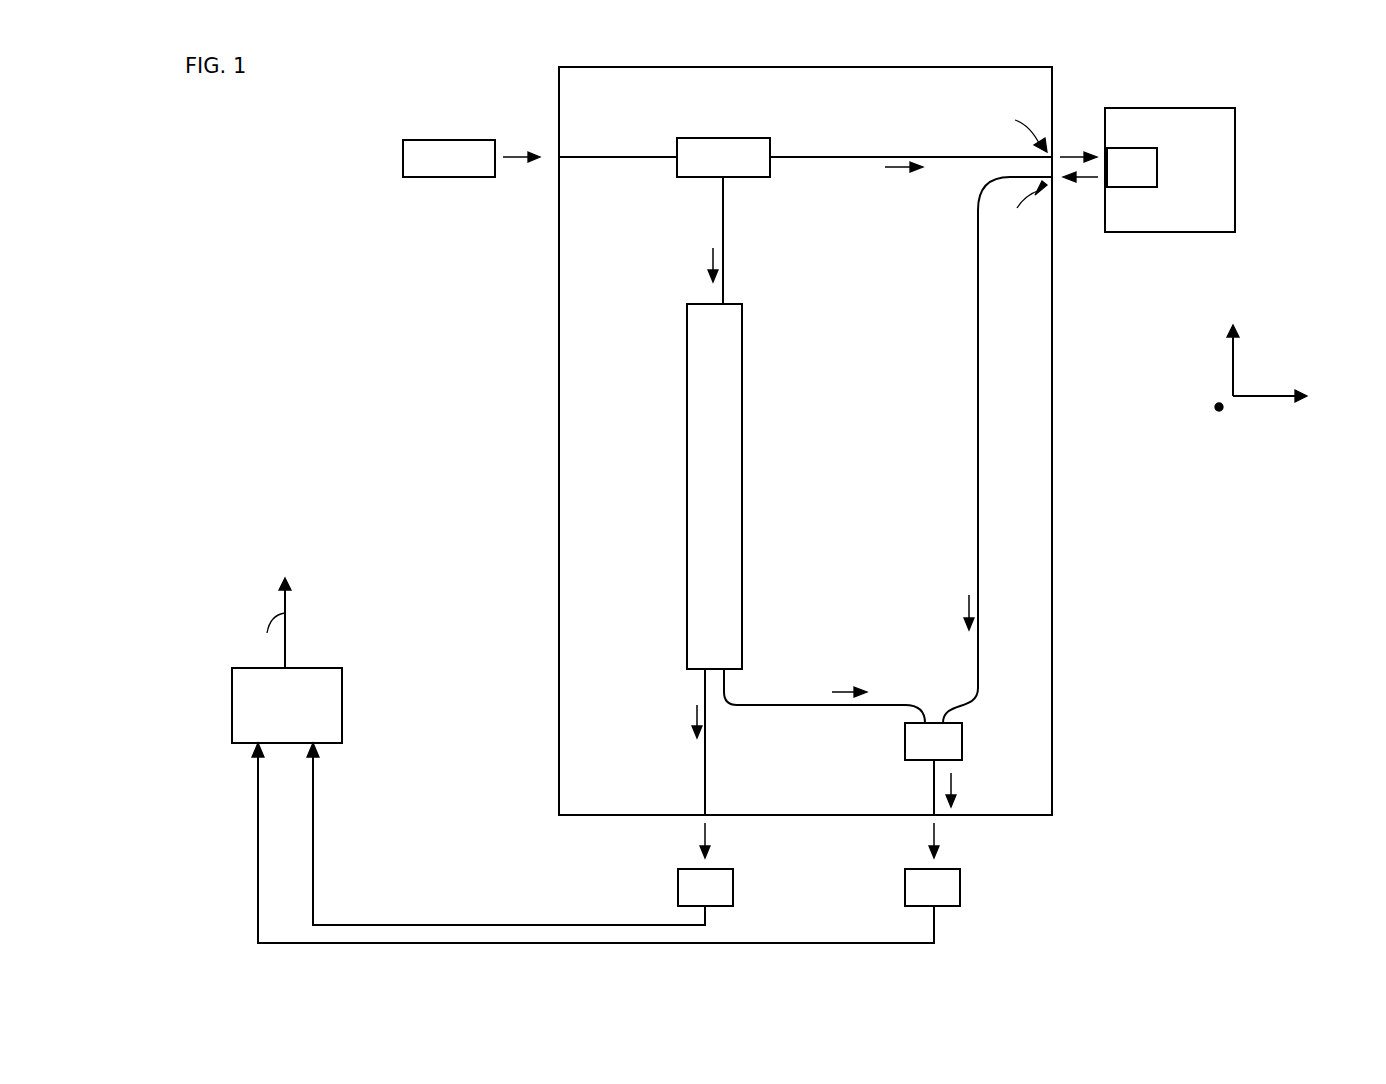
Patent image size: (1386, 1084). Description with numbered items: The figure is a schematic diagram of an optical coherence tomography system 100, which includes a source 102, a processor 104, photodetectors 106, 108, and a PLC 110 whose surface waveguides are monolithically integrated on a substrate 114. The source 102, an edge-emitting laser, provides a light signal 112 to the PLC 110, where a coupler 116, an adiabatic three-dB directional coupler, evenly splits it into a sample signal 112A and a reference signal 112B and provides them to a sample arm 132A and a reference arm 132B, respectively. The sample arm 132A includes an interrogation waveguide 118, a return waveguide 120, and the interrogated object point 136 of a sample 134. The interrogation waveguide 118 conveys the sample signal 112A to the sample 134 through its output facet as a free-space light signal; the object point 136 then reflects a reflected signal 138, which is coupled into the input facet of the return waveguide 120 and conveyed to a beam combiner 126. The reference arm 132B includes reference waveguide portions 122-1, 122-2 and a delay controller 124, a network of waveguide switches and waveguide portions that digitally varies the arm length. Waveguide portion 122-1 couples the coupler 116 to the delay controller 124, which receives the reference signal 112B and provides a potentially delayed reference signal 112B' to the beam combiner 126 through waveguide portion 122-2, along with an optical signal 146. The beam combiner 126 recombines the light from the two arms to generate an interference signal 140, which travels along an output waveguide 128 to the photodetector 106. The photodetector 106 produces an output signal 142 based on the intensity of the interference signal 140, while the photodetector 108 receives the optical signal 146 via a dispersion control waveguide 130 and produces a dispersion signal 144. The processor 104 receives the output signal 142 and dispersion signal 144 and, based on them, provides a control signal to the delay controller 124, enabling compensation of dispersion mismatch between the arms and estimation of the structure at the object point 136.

The optical coherence tomography system 100 is at (410, 90).
The source 102 is at (403, 157).
The processor 104 is at (287, 705).
The photodetector 106 is at (612, 155).
The photodetector 108 is at (678, 888).
The PLC 110 is at (558, 377).
The light signal 112 is at (518, 153).
The sample signal 112A is at (898, 170).
The reference signal 112B is at (667, 265).
The reference signal 112B' is at (847, 664).
The substrate 114 is at (874, 468).
The coupler 116 is at (725, 137).
The interrogation waveguide 118 is at (833, 155).
The return waveguide 120 is at (982, 267).
The reference waveguide portion 122-1 is at (725, 205).
The reference waveguide portion 122-2 is at (777, 707).
The delay controller 124 is at (685, 383).
The beam combiner 126 is at (962, 742).
The output waveguide 128 is at (932, 793).
The dispersion control waveguide 130 is at (705, 777).
The sample arm 132A is at (1018, 388).
The reference arm 132B is at (598, 298).
The sample 134 is at (1167, 233).
The object point 136 is at (1132, 167).
The reflected signal 138 is at (1083, 180).
The interference signal 140 is at (955, 782).
The output signal 142 is at (258, 800).
The dispersion signal 144 is at (313, 780).
The optical signal 146 is at (695, 712).